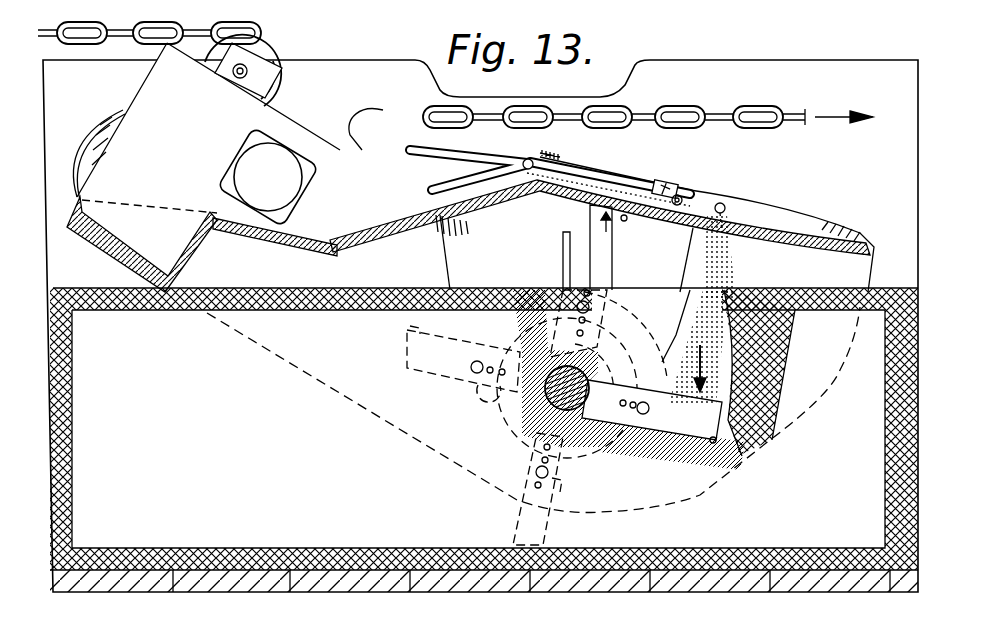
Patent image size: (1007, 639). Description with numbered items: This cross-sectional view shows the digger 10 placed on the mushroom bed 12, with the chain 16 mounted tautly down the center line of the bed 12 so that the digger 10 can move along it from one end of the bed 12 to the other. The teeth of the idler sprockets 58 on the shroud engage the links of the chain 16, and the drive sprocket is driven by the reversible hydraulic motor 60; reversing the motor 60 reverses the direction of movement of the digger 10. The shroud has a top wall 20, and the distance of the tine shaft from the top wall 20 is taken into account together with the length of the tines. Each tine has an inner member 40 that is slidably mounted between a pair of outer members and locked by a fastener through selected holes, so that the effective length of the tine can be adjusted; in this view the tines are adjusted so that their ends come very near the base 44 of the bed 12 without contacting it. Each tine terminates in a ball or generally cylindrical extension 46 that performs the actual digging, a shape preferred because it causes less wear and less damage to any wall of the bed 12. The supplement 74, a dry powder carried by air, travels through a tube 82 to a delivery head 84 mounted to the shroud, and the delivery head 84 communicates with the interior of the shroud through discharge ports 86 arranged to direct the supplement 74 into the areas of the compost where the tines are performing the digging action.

The digger 10 is at (868, 214).
The mushroom bed 12 is at (110, 550).
The chain 16 is at (693, 110).
The top wall 20 is at (858, 238).
The inner member 40 is at (598, 258).
The base 44 is at (806, 581).
The ball or generally cylindrical extension 46 is at (626, 222).
The idler sprocket 58 is at (268, 57).
The hydraulic motor 60 is at (266, 177).
The supplement 74 is at (724, 271).
The tube 82 is at (623, 196).
The delivery head 84 is at (722, 206).
The discharge port 86 is at (740, 230).